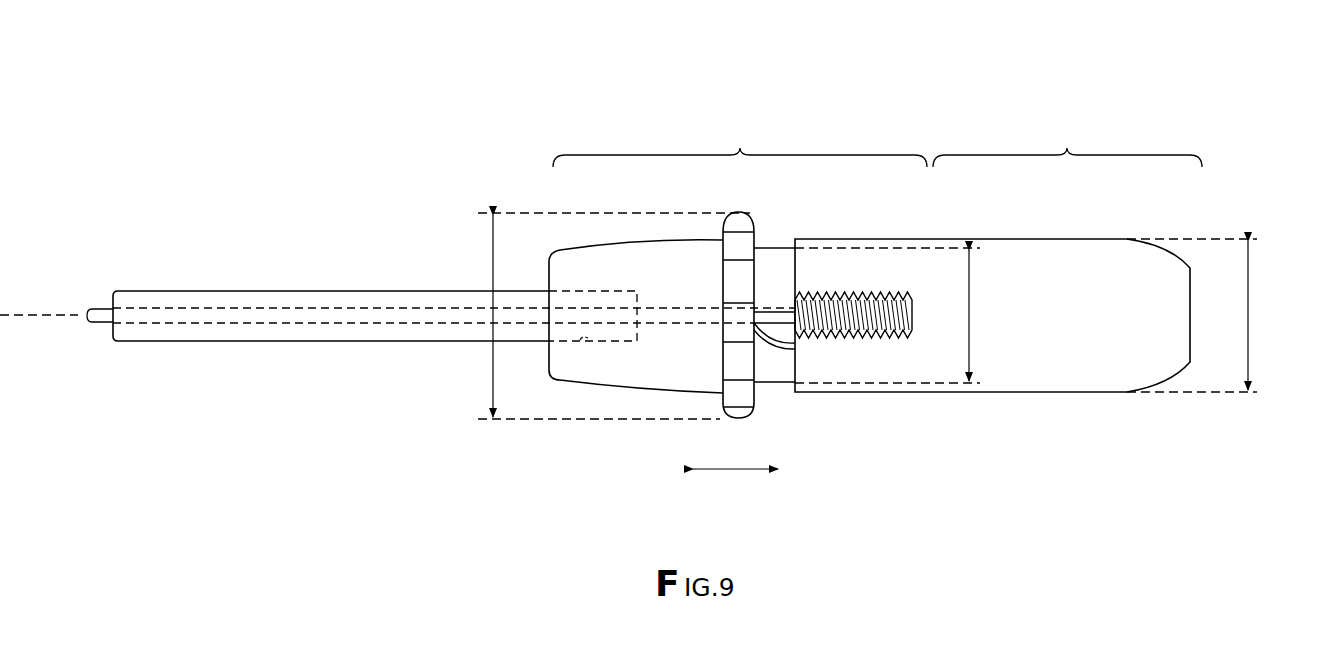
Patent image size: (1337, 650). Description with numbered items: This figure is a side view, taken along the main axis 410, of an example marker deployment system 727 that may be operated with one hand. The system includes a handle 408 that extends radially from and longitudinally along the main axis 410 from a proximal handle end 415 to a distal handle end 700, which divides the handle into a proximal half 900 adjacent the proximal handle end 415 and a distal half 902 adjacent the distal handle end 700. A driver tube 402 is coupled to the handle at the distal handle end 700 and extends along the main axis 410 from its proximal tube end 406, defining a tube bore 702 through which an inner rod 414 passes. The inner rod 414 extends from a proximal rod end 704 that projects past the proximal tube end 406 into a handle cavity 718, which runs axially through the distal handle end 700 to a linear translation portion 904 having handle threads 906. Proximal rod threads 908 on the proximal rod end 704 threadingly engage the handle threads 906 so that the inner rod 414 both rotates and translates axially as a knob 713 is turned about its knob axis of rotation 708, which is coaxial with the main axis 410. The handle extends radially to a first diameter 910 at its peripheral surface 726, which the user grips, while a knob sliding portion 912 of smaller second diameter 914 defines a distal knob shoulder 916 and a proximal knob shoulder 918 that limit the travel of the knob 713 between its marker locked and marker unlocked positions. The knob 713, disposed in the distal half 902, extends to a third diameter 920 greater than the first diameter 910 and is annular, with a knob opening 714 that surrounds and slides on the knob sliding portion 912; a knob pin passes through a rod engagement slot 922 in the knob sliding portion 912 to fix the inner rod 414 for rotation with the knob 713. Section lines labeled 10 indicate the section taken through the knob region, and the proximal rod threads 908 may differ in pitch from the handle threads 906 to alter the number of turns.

The section line 10 is at (740, 193).
The driver tube 402 is at (148, 291).
The proximal tube end 406 is at (636, 300).
The handle 408 is at (926, 236).
The main axis 410 is at (100, 315).
The inner rod 414 is at (178, 306).
The proximal handle end 415 is at (1192, 298).
The distal handle end 700 is at (552, 373).
The tube bore 702 is at (216, 291).
The proximal rod end 704 is at (861, 343).
The knob axis of rotation 708 is at (17, 315).
The knob 713 is at (762, 420).
The knob opening 714 is at (722, 397).
The handle cavity 718 is at (582, 344).
The peripheral surface 726 is at (1047, 238).
The marker deployment system 727 is at (863, 99).
The proximal half 900 is at (1067, 148).
The distal half 902 is at (740, 148).
The linear translation portion 904 is at (881, 296).
The handle threads 906 is at (899, 343).
The proximal rod threads 908 is at (839, 342).
The first diameter 910 is at (1250, 331).
The knob sliding portion 912 is at (786, 262).
The second diameter 914 is at (971, 327).
The distal knob shoulder 916 is at (726, 246).
The proximal knob shoulder 918 is at (794, 395).
The third diameter 920 is at (490, 262).
The rod engagement slot 922 is at (772, 341).